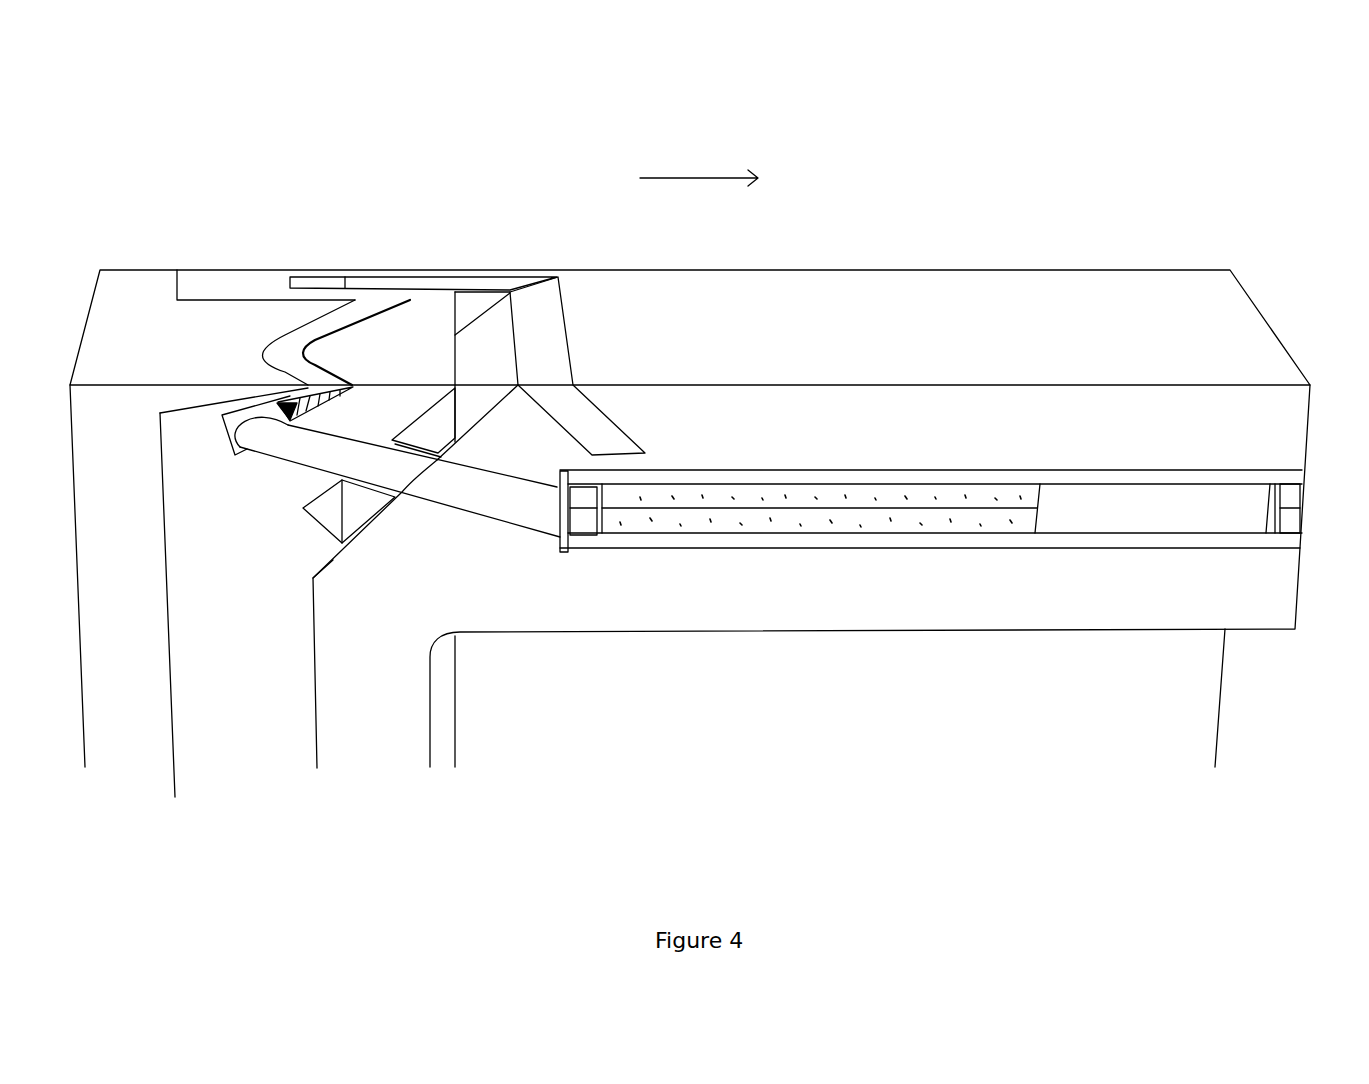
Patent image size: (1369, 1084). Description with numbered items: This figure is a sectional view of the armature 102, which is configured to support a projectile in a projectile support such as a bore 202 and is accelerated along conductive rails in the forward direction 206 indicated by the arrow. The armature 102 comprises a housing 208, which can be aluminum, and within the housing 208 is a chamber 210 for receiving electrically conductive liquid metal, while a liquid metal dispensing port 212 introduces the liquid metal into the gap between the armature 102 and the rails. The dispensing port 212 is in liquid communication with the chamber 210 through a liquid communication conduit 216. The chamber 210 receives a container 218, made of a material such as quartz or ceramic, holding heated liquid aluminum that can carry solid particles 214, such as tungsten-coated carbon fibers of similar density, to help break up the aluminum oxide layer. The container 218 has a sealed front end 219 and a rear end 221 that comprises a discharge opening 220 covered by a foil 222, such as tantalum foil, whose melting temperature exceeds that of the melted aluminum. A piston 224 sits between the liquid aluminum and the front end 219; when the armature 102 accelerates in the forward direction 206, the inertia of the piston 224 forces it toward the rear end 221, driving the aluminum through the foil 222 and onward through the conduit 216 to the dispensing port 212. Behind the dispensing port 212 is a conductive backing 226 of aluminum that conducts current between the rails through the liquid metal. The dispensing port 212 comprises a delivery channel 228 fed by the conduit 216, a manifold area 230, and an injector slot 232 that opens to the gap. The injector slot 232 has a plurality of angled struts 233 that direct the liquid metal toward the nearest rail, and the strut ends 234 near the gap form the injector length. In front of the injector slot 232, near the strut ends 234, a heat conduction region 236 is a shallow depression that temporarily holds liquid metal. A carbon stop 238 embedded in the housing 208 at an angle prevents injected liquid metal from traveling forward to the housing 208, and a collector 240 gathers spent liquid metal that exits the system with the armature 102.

The armature 102 is at (1262, 68).
The bore 202 is at (1221, 690).
The forward direction 206 is at (680, 178).
The housing 208 is at (1000, 270).
The chamber 210 is at (935, 470).
The liquid metal dispensing port 212 is at (241, 270).
The solid particles 214 is at (752, 497).
The liquid communication conduit 216 is at (463, 512).
The container 218 is at (1022, 484).
The front end 219 is at (1306, 497).
The discharge opening 220 is at (583, 535).
The rear end 221 is at (559, 488).
The foil 222 is at (560, 548).
The piston 224 is at (1028, 533).
The conductive backing 226 is at (100, 270).
The delivery channel 228 is at (286, 460).
The manifold area 230 is at (222, 430).
The injector slot 232 is at (312, 408).
The struts 233 is at (351, 392).
The strut ends 234 is at (357, 360).
The heat conduction region 236 is at (407, 298).
The stop 238 is at (534, 272).
The collector 240 is at (470, 292).